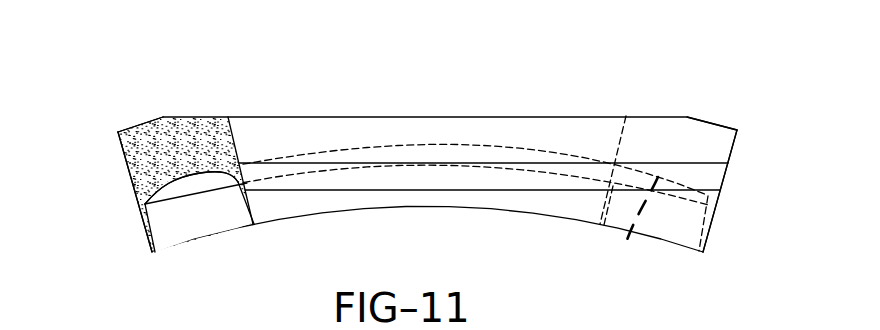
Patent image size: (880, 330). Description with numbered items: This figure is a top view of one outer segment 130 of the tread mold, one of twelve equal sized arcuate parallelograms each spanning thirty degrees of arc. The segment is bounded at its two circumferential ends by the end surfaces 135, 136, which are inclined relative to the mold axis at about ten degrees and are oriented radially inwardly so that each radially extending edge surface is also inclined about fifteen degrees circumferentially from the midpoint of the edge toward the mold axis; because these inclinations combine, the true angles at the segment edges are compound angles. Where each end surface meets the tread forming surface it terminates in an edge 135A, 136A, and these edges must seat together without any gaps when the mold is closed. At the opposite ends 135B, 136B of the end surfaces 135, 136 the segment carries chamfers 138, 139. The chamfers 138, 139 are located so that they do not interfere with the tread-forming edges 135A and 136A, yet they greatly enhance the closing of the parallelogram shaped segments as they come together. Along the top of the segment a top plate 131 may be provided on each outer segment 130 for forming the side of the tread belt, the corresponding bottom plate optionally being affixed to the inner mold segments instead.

The outer segment 130 is at (537, 117).
The top plate 131 is at (357, 138).
The end surface 135 is at (148, 165).
The edge 135A is at (188, 178).
The end 135B is at (117, 131).
The end surface 136 is at (707, 170).
The edge 136A is at (625, 245).
The end 136B is at (738, 130).
The chamfer 138 is at (723, 127).
The chamfer 139 is at (133, 126).